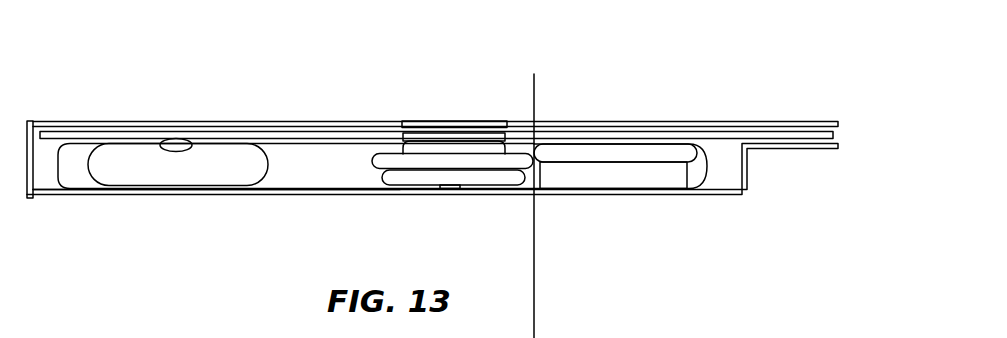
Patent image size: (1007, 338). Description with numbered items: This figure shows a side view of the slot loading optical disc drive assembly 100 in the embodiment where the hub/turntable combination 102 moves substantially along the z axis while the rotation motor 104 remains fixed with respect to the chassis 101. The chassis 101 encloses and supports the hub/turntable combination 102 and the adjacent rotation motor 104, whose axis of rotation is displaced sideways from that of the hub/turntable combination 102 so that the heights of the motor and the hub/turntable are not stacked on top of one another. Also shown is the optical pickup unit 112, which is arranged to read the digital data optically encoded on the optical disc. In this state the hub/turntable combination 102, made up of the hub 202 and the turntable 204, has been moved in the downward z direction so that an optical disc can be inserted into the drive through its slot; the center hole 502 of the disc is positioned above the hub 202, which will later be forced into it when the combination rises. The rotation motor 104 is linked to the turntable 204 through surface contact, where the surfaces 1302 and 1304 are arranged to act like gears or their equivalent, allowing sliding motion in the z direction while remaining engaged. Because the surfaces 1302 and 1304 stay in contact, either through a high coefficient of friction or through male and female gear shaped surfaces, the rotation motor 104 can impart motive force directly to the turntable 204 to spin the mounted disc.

The slot loading optical disc drive assembly 100 is at (752, 167).
The chassis 101 is at (262, 196).
The hub/turntable combination 102 is at (363, 170).
The rotation motor 104 is at (643, 177).
The optical pickup unit 112 is at (178, 162).
The hub 202 is at (418, 148).
The turntable 204 is at (427, 177).
The center hole 502 is at (475, 113).
The contact surface 1302 is at (540, 155).
The contact surface 1304 is at (518, 160).